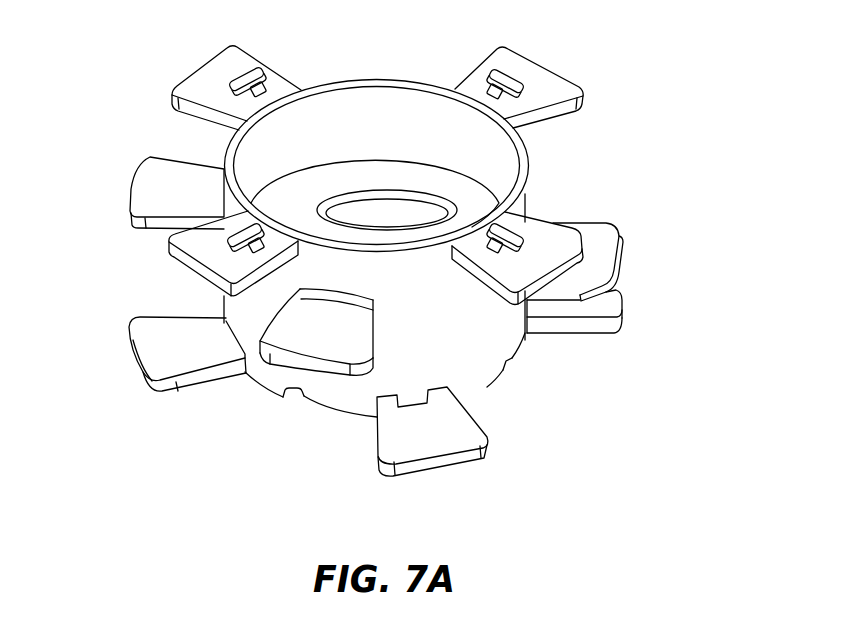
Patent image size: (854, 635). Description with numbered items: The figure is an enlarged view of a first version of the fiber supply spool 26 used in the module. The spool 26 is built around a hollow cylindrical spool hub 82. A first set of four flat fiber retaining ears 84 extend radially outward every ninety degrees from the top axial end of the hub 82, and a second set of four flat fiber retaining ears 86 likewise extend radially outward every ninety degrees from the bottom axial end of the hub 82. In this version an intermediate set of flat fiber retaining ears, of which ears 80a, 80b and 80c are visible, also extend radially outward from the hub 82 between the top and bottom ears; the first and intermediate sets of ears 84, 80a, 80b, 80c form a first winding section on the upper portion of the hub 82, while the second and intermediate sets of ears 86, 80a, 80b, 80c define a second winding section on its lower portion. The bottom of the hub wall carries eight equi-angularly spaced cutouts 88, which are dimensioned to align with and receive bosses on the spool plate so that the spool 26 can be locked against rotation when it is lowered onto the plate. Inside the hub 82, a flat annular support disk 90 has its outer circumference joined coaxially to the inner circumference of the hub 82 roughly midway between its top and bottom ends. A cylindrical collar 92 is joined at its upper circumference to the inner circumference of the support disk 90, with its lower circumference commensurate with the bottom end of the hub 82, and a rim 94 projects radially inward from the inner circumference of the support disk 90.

The spool 26 is at (576, 157).
The spool hub 82 is at (460, 330).
The first set of flat fiber retaining ears 84 is at (248, 55).
The second set of flat fiber retaining ears 86 is at (615, 303).
The cutouts 88 is at (302, 393).
The support disk 90 is at (353, 170).
The collar 92 is at (330, 228).
The rim 94 is at (397, 197).
The intermediate flat fiber retaining ear 80a is at (610, 237).
The intermediate flat fiber retaining ear 80b is at (330, 355).
The intermediate flat fiber retaining ear 80c is at (168, 163).